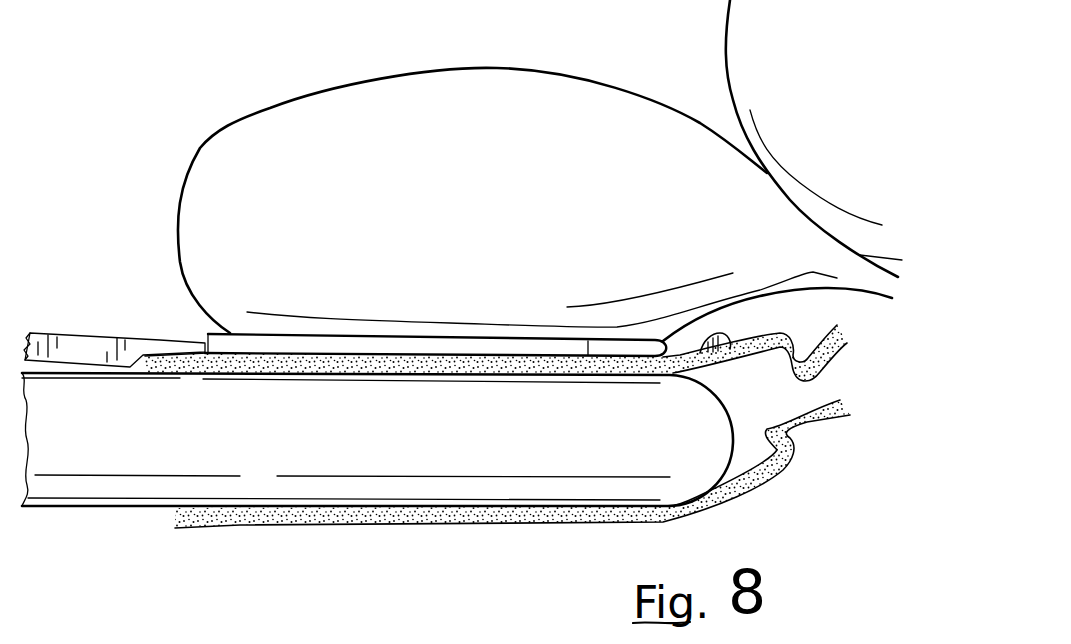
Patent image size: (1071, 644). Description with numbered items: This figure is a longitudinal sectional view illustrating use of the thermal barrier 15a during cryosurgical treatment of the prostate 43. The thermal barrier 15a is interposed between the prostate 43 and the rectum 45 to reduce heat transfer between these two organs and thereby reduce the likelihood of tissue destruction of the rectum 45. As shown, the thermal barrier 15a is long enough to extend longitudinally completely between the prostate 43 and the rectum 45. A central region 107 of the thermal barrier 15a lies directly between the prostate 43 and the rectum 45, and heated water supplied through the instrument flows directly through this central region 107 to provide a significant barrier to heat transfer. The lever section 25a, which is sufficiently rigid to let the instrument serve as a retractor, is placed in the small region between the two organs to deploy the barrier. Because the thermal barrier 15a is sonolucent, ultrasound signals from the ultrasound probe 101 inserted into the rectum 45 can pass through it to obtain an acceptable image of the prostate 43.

The prostate 43 is at (247, 125).
The lever section 25a is at (722, 333).
The thermal barrier 15a is at (213, 334).
The central region 107 is at (513, 348).
The ultrasound probe 101 is at (403, 492).
The rectum 45 is at (540, 527).